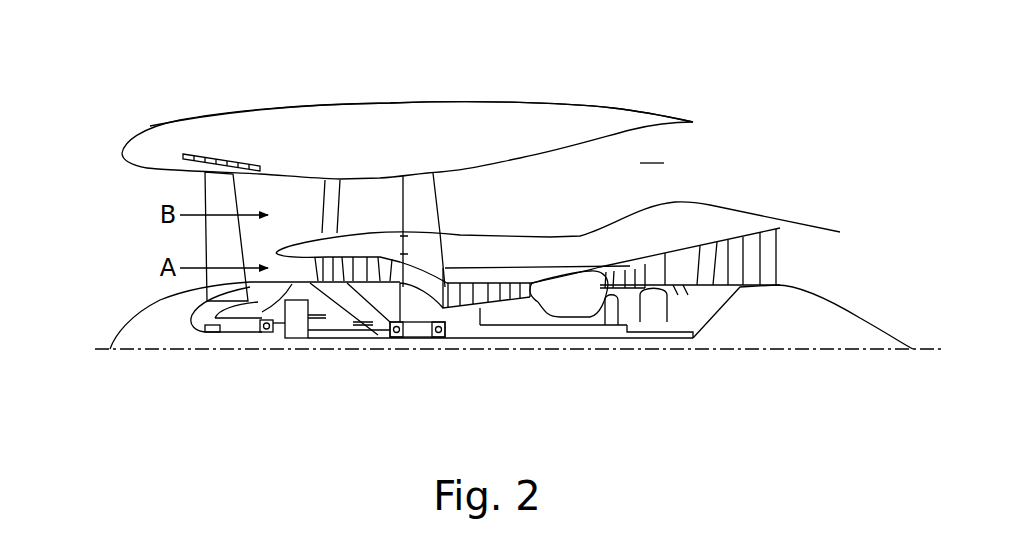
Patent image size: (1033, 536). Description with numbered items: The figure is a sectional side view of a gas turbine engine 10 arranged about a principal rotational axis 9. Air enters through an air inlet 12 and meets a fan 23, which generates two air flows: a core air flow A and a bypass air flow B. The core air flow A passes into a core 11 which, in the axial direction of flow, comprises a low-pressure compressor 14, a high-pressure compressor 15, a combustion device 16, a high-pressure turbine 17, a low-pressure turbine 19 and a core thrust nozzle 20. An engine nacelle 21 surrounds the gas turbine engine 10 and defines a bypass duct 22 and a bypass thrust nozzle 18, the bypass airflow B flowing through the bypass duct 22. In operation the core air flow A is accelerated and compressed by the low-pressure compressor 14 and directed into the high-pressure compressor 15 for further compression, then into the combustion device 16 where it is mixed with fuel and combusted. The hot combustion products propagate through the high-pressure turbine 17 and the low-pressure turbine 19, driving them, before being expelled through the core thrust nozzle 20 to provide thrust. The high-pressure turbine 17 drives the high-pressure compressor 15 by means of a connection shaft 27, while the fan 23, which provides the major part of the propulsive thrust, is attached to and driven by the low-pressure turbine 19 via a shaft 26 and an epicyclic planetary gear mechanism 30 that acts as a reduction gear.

The principal rotational axis 9 is at (808, 350).
The gas turbine engine 10 is at (177, 119).
The core 11 is at (583, 260).
The air inlet 12 is at (135, 188).
The low-pressure compressor 14 is at (366, 268).
The high-pressure compressor 15 is at (500, 287).
The combustion device 16 is at (567, 295).
The high-pressure turbine 17 is at (613, 272).
The bypass thrust nozzle 18 is at (793, 120).
The low-pressure turbine 19 is at (757, 272).
The core thrust nozzle 20 is at (823, 252).
The engine nacelle 21 is at (415, 110).
The bypass duct 22 is at (494, 212).
The fan 23 is at (210, 256).
The shaft 26 is at (467, 337).
The connection shaft 27 is at (528, 322).
The epicyclic planetary gear mechanism 30 is at (300, 328).